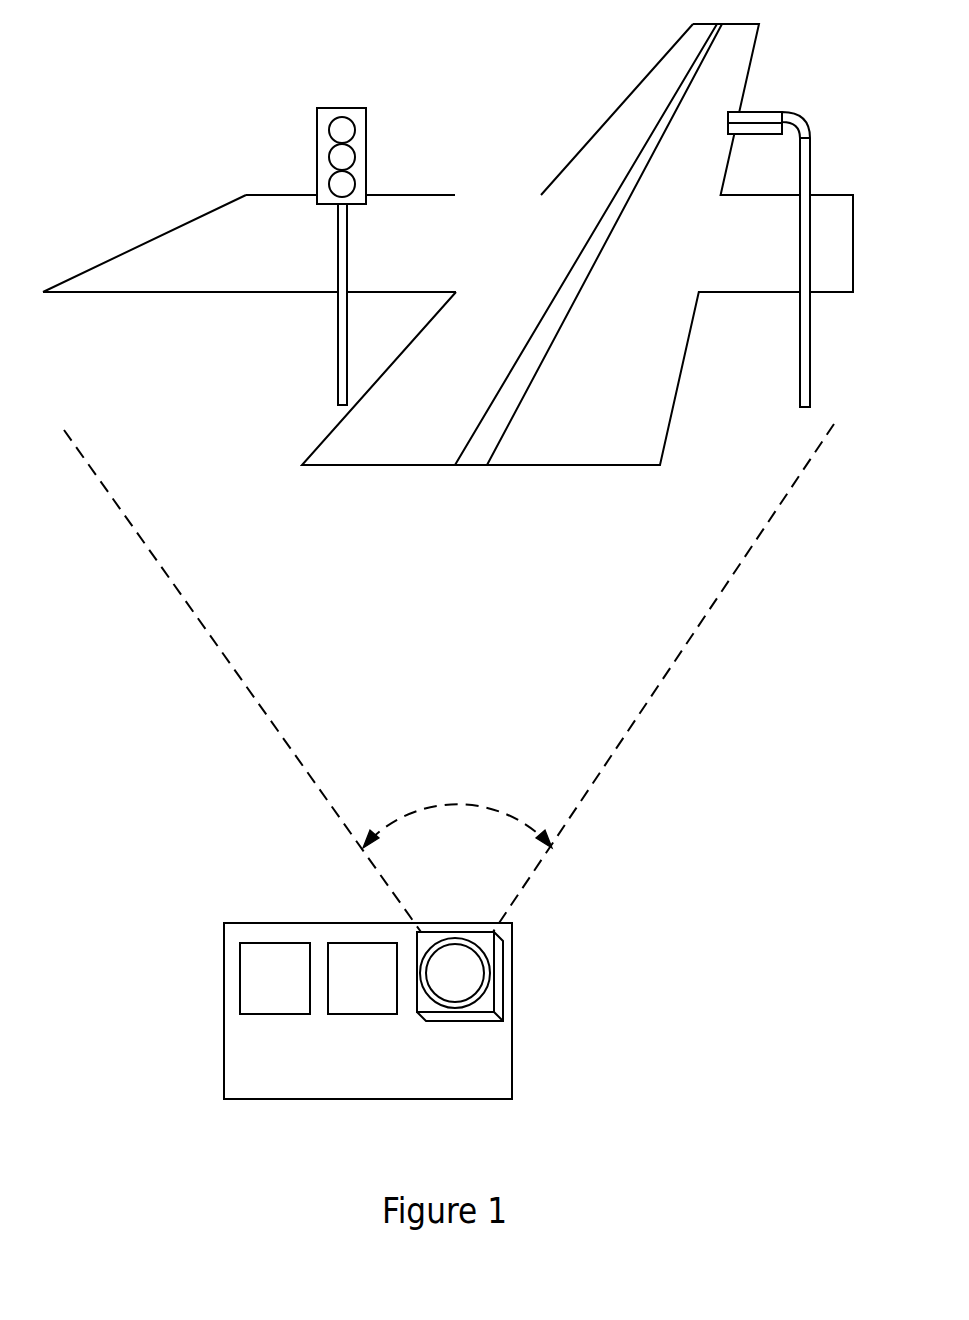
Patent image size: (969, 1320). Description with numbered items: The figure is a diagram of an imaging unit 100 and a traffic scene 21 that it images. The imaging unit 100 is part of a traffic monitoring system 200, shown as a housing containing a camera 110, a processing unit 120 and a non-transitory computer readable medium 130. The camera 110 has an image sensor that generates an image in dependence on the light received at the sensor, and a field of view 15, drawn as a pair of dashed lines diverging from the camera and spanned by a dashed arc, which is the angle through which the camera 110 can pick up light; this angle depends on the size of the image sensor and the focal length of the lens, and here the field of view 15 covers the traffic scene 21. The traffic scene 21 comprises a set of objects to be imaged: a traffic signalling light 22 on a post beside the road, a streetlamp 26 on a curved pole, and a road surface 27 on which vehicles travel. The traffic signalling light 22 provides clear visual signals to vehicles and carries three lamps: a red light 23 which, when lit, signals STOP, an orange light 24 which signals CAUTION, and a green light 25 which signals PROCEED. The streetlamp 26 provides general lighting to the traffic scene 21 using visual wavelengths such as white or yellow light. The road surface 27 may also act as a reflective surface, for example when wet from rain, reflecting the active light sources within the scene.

The field of view 15 is at (498, 808).
The traffic scene 21 is at (255, 100).
The traffic signalling light 22 is at (396, 222).
The red light 23 is at (343, 129).
The orange light 24 is at (343, 156).
The green light 25 is at (343, 184).
The streetlamp 26 is at (728, 134).
The road surface 27 is at (652, 397).
The imaging unit 100 is at (517, 995).
The camera 110 is at (468, 963).
The processing unit 120 is at (362, 943).
The non-transitory computer readable medium 130 is at (275, 943).
The traffic monitoring system 200 is at (435, 1002).